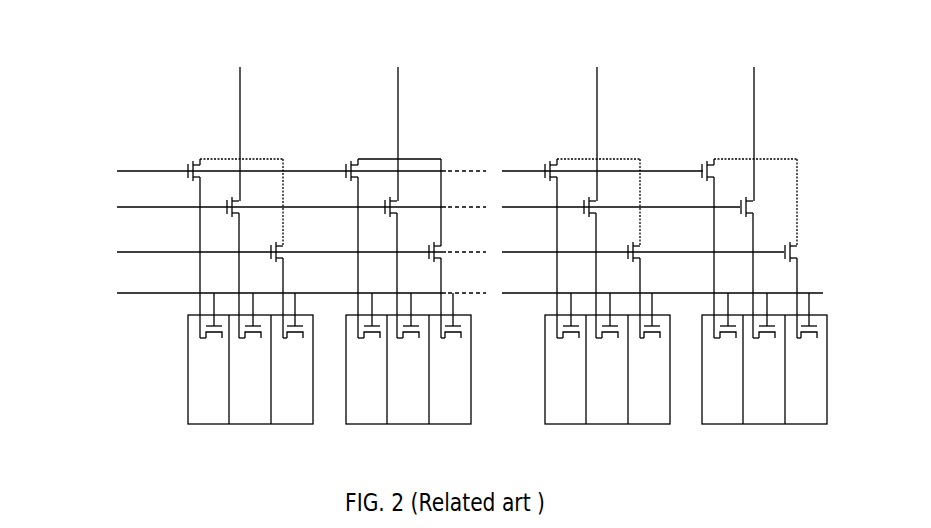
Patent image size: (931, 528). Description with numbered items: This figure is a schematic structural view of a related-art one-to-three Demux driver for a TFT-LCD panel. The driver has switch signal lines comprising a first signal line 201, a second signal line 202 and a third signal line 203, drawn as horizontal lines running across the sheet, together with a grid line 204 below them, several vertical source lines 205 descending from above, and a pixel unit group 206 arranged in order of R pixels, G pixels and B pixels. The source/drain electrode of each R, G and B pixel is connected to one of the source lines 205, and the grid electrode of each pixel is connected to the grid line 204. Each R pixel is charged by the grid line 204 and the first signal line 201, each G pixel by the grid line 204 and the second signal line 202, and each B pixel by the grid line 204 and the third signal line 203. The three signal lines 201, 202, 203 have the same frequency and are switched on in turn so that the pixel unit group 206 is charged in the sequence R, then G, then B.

The first signal line 201 is at (392, 171).
The second signal line 202 is at (410, 207).
The third signal line 203 is at (432, 252).
The grid line 204 is at (452, 293).
The source line 205 is at (497, 118).
The pixel unit group 206 is at (242, 424).